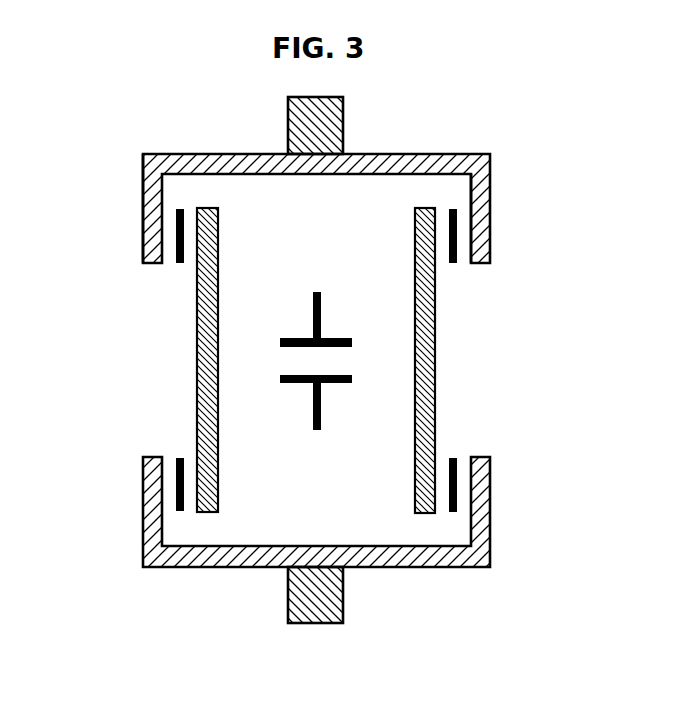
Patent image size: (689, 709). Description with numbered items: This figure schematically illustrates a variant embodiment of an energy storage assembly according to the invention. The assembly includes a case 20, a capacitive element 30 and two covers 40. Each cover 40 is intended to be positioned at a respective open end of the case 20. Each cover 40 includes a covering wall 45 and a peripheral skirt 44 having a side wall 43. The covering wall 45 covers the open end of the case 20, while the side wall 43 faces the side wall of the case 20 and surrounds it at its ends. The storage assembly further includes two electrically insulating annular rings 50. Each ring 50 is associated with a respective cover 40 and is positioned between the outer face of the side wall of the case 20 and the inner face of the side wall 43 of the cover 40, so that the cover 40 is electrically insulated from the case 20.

The case 20 is at (178, 362).
The capacitive element 30 is at (320, 313).
The cover 40 is at (482, 203).
The side wall 43 is at (462, 228).
The peripheral skirt 44 is at (142, 213).
The covering wall 45 is at (395, 162).
The electrically insulating annular ring 50 is at (459, 243).